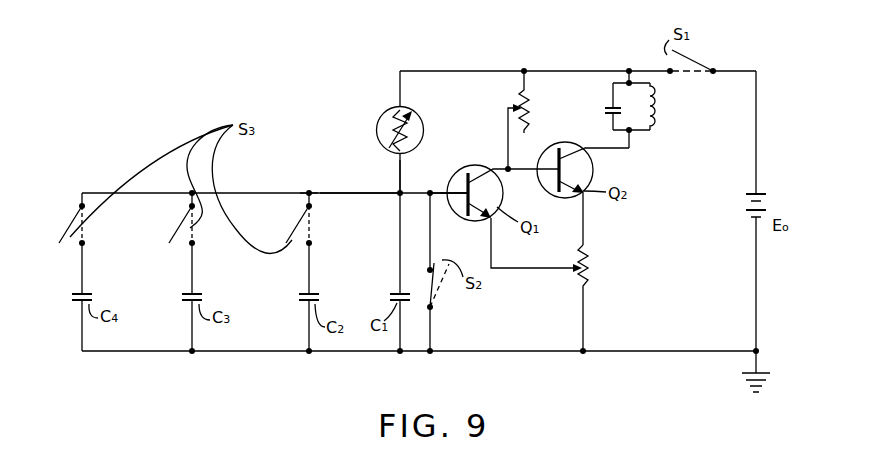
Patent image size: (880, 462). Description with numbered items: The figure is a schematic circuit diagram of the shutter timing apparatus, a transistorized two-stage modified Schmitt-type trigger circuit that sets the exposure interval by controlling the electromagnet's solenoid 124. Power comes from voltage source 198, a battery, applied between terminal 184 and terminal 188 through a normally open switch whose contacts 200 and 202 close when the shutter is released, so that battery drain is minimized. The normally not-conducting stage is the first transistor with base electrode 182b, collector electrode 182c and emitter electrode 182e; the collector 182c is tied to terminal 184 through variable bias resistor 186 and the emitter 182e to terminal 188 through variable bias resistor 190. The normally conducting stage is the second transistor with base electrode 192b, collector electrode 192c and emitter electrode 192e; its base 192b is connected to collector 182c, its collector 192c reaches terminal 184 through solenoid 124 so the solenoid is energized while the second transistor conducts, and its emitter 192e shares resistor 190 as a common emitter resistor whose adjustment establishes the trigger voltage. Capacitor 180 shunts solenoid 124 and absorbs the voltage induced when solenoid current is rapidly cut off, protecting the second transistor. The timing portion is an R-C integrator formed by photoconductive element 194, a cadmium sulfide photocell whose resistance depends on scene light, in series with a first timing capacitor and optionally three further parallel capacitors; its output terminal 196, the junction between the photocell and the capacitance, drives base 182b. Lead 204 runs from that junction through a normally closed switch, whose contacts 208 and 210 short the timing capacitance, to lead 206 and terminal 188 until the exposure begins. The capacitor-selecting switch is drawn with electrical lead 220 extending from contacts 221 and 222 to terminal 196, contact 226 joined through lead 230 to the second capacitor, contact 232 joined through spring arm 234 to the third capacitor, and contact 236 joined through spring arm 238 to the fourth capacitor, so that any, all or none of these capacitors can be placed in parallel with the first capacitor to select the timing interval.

The solenoid 124 is at (653, 105).
The capacitor 180 is at (608, 106).
The base electrode 182b is at (453, 184).
The collector electrode 182c is at (471, 166).
The emitter electrode 182e is at (482, 211).
The terminal 184 is at (629, 70).
The variable bias resistor 186 is at (531, 109).
The terminal 188 is at (755, 351).
The variable bias resistor 190 is at (590, 275).
The base electrode 192b is at (538, 171).
The collector electrode 192c is at (592, 161).
The emitter electrode 192e is at (585, 197).
The photoconductive element 194 is at (378, 118).
The output terminal 196 is at (398, 193).
The voltage source 198 is at (750, 212).
The switch contact 200 is at (713, 70).
The switch contact 202 is at (669, 71).
The lead 204 is at (431, 250).
The lead 206 is at (431, 326).
The switch contact 208 is at (430, 270).
The switch contact 210 is at (430, 308).
The electrical lead 220 is at (352, 193).
The contact 221 is at (308, 192).
The contact 222 is at (301, 170).
The contact 226 is at (311, 243).
The lead 230 is at (311, 277).
The contact 232 is at (194, 243).
The spring arm 234 is at (194, 289).
The contact 236 is at (84, 243).
The spring arm 238 is at (84, 290).